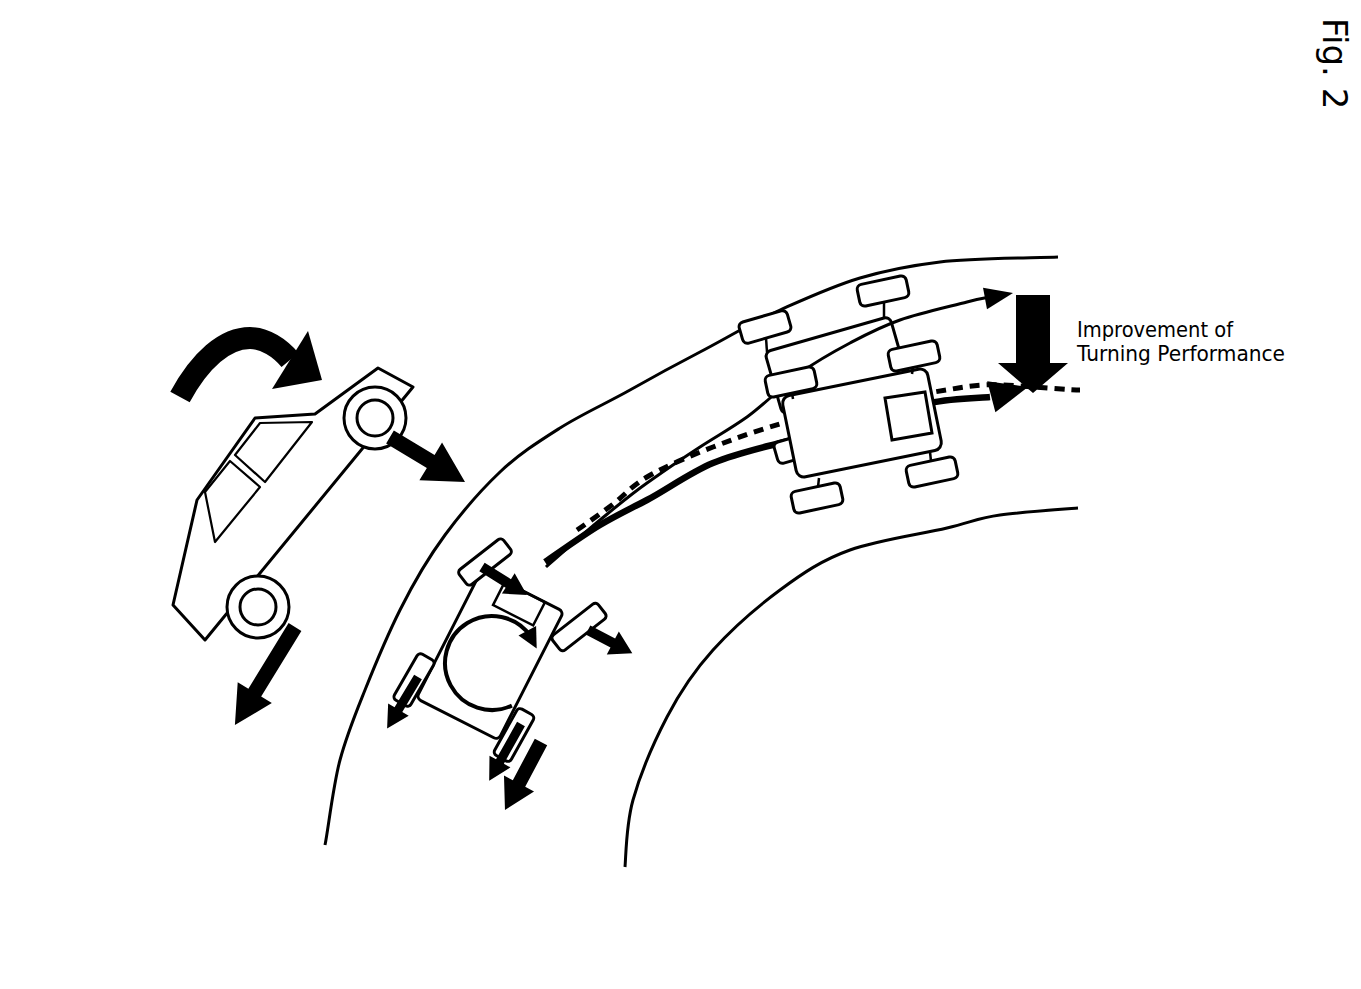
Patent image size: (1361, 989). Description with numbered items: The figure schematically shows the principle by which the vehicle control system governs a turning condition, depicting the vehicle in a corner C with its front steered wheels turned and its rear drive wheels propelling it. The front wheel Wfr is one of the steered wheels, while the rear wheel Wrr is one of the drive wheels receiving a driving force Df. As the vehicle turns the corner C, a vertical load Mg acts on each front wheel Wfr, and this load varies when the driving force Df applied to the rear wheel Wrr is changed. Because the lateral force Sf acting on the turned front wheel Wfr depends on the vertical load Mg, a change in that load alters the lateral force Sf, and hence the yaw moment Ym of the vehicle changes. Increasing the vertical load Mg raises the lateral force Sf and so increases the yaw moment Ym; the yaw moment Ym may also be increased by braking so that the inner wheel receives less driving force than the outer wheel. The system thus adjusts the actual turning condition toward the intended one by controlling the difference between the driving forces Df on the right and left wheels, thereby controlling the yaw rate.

The right front wheel Wfr is at (597, 615).
The right rear wheel Wrr is at (533, 722).
The vertical load Mg is at (452, 452).
The driving force Df is at (247, 720).
The yaw moment Ym is at (446, 643).
The lateral force Sf is at (633, 643).
The corner C is at (722, 305).